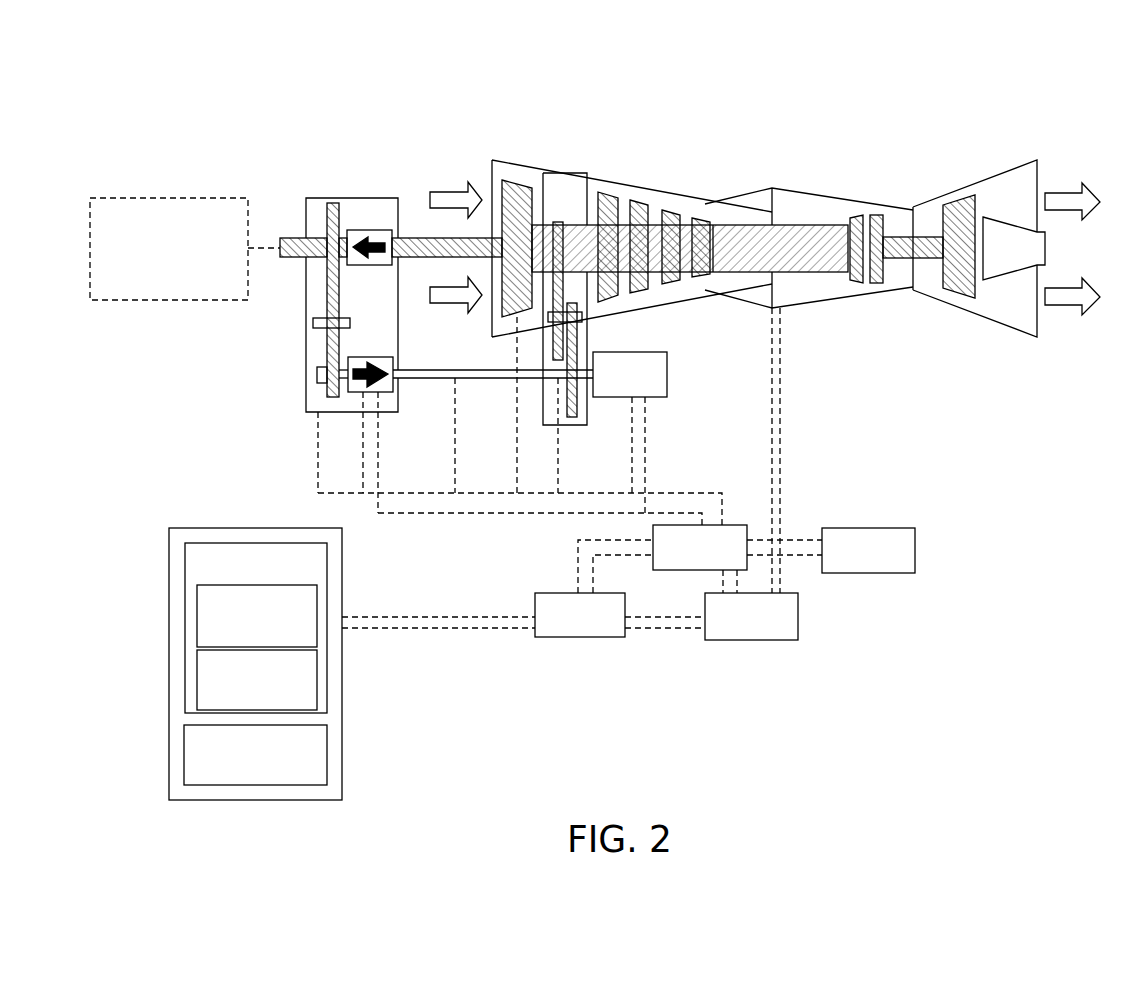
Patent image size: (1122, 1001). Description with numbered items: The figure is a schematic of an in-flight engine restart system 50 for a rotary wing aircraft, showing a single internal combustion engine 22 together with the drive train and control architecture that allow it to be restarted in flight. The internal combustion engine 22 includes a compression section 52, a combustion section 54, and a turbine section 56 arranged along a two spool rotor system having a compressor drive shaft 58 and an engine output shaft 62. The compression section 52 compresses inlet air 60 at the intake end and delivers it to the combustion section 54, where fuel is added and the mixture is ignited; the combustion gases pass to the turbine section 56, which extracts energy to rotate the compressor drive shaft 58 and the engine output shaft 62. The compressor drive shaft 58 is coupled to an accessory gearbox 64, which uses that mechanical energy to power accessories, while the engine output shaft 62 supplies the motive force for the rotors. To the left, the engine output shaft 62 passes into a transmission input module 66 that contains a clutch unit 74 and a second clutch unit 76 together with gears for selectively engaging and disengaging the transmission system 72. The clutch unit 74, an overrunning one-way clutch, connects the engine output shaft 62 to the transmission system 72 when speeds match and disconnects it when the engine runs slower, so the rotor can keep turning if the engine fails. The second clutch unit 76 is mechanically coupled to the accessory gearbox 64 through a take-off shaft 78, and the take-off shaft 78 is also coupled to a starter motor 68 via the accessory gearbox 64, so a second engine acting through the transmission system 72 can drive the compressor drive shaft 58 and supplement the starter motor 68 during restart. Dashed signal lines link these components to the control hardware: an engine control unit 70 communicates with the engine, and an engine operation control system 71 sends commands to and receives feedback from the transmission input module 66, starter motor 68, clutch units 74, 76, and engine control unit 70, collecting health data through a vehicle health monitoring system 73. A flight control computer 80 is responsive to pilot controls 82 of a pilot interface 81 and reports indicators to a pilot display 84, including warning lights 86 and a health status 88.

The internal combustion engine 22 is at (878, 362).
The in-flight engine restart system 50 is at (1025, 98).
The compression section 52 is at (667, 200).
The combustion section 54 is at (797, 205).
The turbine section 56 is at (985, 192).
The compressor drive shaft 58 is at (795, 262).
The inlet air 60 is at (466, 187).
The engine output shaft 62 is at (425, 245).
The accessory gearbox 64 is at (560, 182).
The transmission input module 66 is at (412, 402).
The starter motor 68 is at (653, 397).
The engine control unit 70 is at (775, 640).
The engine operation control system 71 is at (698, 570).
The transmission system 72 is at (188, 300).
The vehicle health monitoring system 73 is at (863, 573).
The clutch unit 74 is at (360, 230).
The second clutch unit 76 is at (357, 357).
The take-off shaft 78 is at (472, 378).
The flight control computer 80 is at (558, 593).
The pilot interface 81 is at (170, 710).
The pilot controls 82 is at (327, 763).
The pilot display 84 is at (328, 673).
The warning lights 86 is at (197, 682).
The health status 88 is at (197, 625).